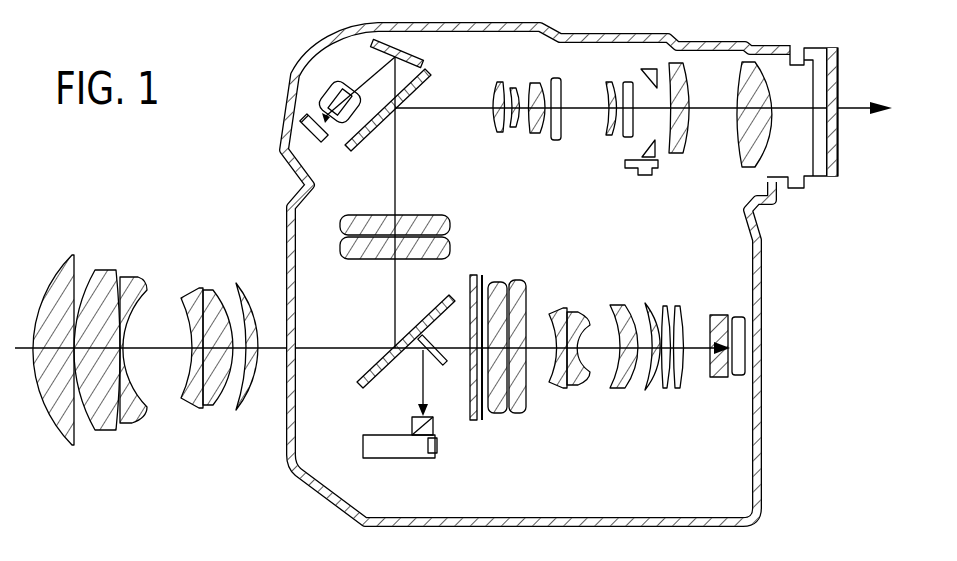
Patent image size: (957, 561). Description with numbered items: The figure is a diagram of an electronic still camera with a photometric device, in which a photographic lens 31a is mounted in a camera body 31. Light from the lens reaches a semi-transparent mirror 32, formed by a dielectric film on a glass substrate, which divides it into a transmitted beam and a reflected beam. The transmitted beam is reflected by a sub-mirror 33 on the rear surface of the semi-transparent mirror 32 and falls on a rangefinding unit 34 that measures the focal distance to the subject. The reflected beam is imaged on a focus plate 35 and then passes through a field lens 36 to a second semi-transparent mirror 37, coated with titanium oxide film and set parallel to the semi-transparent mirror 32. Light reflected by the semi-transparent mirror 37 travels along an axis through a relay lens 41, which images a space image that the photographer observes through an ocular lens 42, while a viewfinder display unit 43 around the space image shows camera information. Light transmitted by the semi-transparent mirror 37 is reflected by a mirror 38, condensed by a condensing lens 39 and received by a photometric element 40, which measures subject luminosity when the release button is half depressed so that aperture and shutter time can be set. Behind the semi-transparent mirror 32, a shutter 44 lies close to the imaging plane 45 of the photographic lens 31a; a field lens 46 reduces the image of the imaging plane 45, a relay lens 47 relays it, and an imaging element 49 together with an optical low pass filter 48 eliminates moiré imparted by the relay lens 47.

The camera body 31 is at (763, 450).
The photographic lens 31a is at (140, 413).
The semi-transparent mirror 32 is at (370, 366).
The sub-mirror 33 is at (441, 362).
The rangefinding unit 34 is at (404, 458).
The focus plate 35 is at (361, 263).
The field lens 36 is at (451, 241).
The semi-transparent mirror 37 is at (367, 143).
The mirror 38 is at (407, 53).
The condensing lens 39 is at (320, 104).
The photometric element 40 is at (304, 139).
The relay lens 41 is at (607, 138).
The ocular lens 42 is at (734, 143).
The viewfinder display unit 43 is at (651, 176).
The shutter 44 is at (473, 276).
The imaging plane 45 is at (483, 418).
The field lens 46 is at (527, 403).
The relay lens 47 is at (615, 305).
The optical low pass filter 48 is at (723, 315).
The imaging element 49 is at (742, 377).